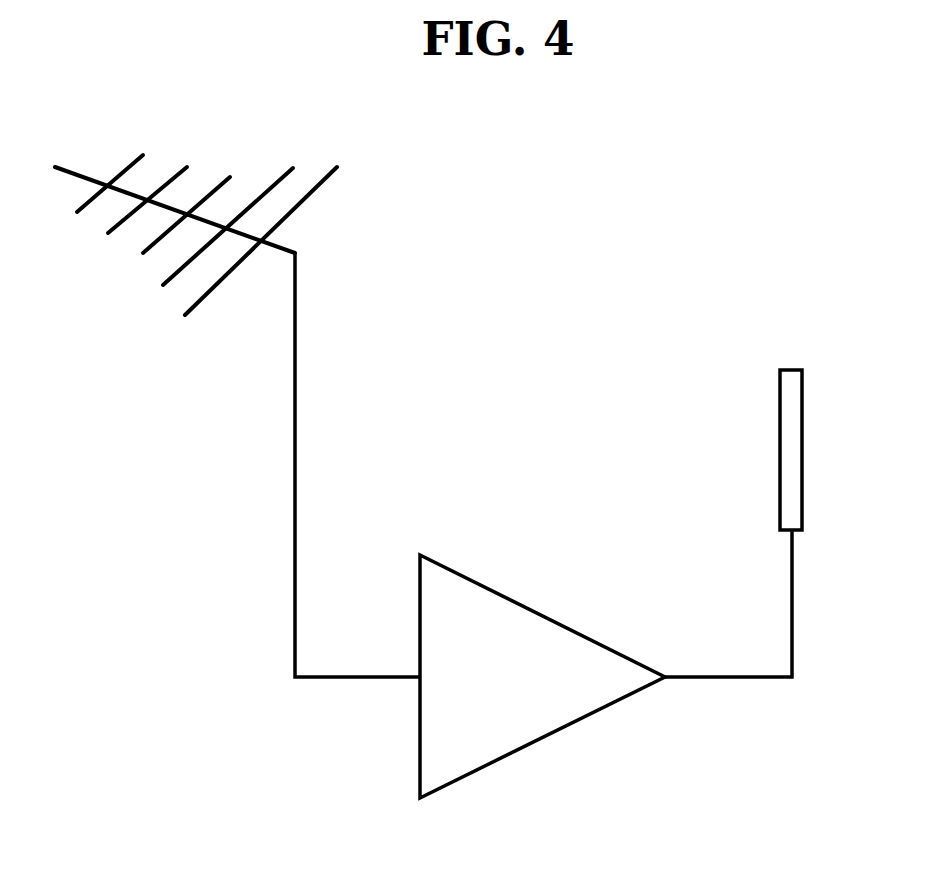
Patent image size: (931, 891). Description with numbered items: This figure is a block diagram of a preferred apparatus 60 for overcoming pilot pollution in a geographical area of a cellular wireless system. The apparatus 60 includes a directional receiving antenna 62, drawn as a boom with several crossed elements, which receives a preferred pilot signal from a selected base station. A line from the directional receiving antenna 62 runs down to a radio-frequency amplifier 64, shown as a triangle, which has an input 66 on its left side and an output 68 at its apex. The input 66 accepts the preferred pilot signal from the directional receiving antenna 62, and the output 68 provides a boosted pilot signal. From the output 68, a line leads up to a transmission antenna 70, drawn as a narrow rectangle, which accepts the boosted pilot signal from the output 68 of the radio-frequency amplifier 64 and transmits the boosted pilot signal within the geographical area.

The apparatus 60 is at (582, 203).
The directional receiving antenna 62 is at (300, 212).
The radio-frequency amplifier 64 is at (528, 692).
The input 66 is at (382, 680).
The output 68 is at (682, 680).
The transmission antenna 70 is at (780, 390).